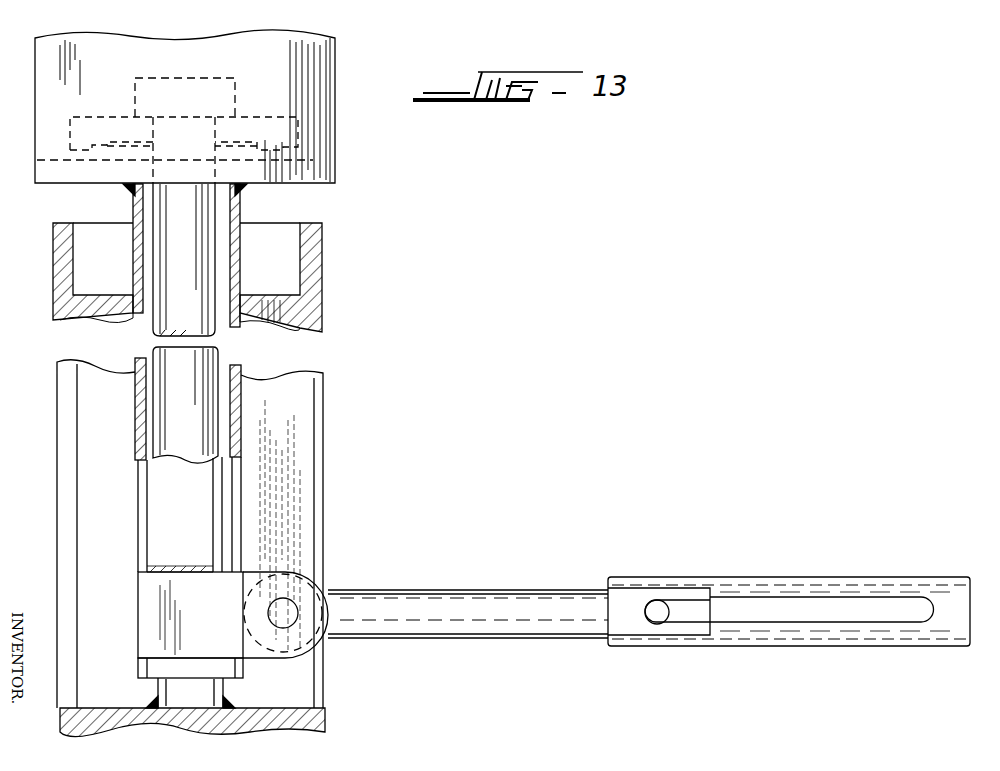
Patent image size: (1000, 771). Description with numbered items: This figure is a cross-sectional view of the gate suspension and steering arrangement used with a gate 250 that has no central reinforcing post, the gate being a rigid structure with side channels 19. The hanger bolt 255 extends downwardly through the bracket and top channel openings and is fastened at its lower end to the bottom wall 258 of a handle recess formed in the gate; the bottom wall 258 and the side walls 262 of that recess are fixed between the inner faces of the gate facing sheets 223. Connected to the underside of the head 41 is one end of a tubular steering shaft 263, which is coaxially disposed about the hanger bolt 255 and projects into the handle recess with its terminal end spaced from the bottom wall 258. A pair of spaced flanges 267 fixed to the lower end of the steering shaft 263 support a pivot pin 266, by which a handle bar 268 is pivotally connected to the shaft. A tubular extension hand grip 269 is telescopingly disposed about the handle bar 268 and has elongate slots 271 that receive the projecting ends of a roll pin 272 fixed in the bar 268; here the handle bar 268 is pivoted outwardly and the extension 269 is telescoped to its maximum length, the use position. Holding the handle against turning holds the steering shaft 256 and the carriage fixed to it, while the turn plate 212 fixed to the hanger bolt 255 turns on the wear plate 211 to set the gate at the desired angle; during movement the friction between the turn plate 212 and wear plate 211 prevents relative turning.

The side channels 19 is at (913, 571).
The head 41 is at (312, 138).
The wear plate 211 is at (106, 152).
The turn plate 212 is at (72, 144).
The gate facing sheets 223 is at (67, 477).
The gate 250 is at (343, 404).
The hanger bolt 255 is at (200, 223).
The steering shaft 256 is at (155, 266).
The bottom wall 258 is at (307, 714).
The side walls 262 is at (195, 84).
The tubular steering shaft 263 is at (187, 551).
The pivot pin 266 is at (289, 612).
The spaced flanges 267 is at (148, 608).
The handle bar 268 is at (492, 598).
The tubular extension hand grip 269 is at (827, 583).
The elongate slots 271 is at (748, 610).
The roll pin 272 is at (657, 611).